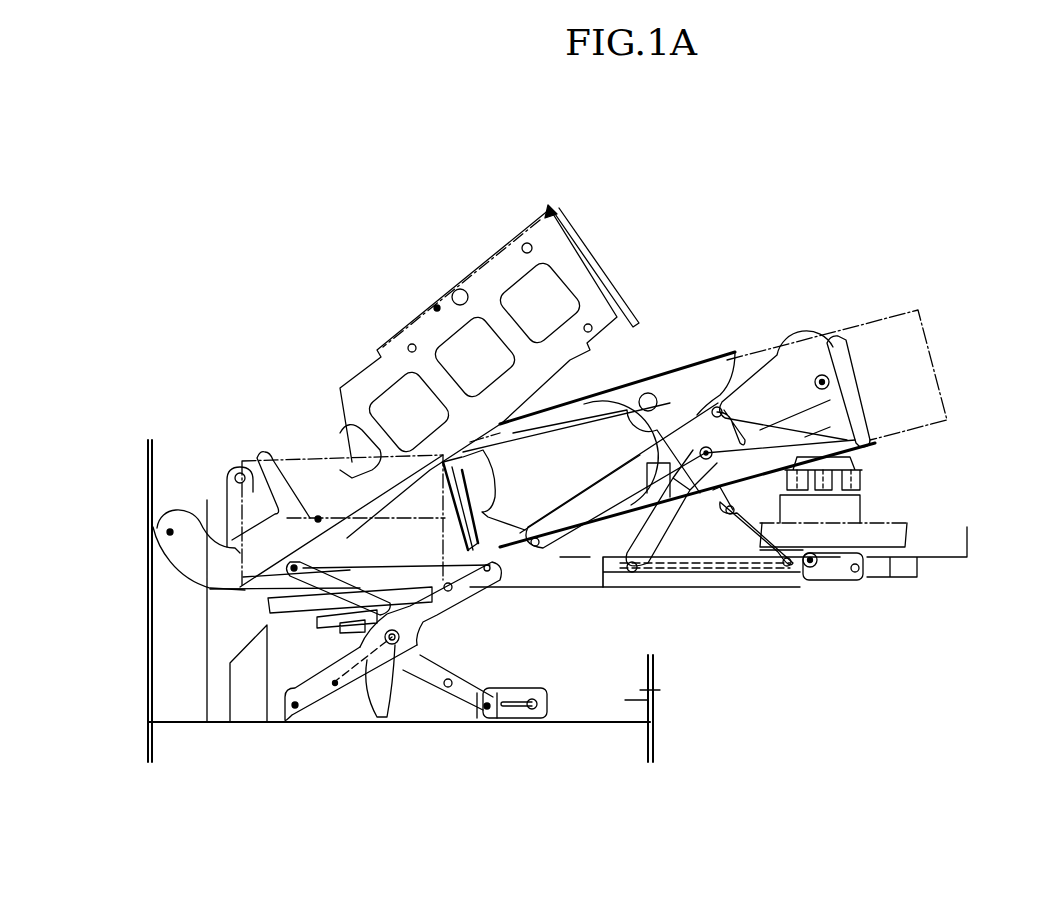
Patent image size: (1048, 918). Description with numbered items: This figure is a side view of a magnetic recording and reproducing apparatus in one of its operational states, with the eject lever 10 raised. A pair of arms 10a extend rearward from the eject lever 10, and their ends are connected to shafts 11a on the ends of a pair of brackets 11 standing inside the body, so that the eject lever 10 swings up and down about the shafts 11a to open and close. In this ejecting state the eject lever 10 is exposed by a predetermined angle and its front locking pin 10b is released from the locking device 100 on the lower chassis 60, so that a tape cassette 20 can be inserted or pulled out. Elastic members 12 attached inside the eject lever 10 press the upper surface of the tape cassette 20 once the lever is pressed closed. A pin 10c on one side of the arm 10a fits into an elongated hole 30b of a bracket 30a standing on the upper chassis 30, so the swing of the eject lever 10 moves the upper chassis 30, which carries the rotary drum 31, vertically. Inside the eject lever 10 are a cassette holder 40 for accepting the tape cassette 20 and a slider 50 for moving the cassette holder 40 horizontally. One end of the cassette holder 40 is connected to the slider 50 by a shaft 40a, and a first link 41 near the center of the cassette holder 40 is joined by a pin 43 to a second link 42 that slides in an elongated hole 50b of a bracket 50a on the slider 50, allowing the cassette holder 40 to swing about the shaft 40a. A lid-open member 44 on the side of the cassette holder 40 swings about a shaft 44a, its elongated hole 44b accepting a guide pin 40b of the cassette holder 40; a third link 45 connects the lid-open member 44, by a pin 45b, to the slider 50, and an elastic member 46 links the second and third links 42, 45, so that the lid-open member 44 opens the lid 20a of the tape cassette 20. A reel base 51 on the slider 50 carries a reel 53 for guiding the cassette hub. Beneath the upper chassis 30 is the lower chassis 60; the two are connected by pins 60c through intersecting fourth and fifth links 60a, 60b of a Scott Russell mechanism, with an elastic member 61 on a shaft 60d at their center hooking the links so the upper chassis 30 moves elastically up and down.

The eject lever 10 is at (552, 208).
The arm 10a is at (185, 556).
The locking pin 10b is at (636, 318).
The pin 10c is at (316, 517).
The bracket 11 is at (160, 637).
The shaft 11a is at (155, 528).
The elastic member 12 is at (460, 289).
The tape cassette 20 is at (918, 312).
The lid 20a is at (650, 352).
The upper chassis 30 is at (205, 598).
The bracket 30a is at (205, 497).
The elongated hole 30b is at (300, 505).
The rotary drum 31 is at (358, 462).
The cassette holder 40 is at (712, 318).
The shaft 40a is at (482, 574).
The guide pin 40b is at (745, 367).
The first link 41 is at (700, 548).
The second link 42 is at (735, 585).
The pin 43 is at (720, 520).
The lid-open member 44 is at (798, 365).
The shaft 44a is at (848, 412).
The elongated hole 44b is at (760, 432).
The third link 45 is at (590, 598).
The pin 45b is at (760, 455).
The elastic member 46 is at (755, 548).
The slider 50 is at (808, 583).
The bracket 50a is at (845, 582).
The elongated hole 50b is at (806, 568).
The reel base 51 is at (885, 537).
The reel 53 is at (855, 485).
The lower chassis 60 is at (590, 724).
The fourth link 60a is at (318, 700).
The fifth link 60b is at (455, 700).
The pin 60c is at (290, 720).
The shaft 60d is at (377, 720).
The elastic member 61 is at (372, 665).
The locking device 100 is at (655, 695).